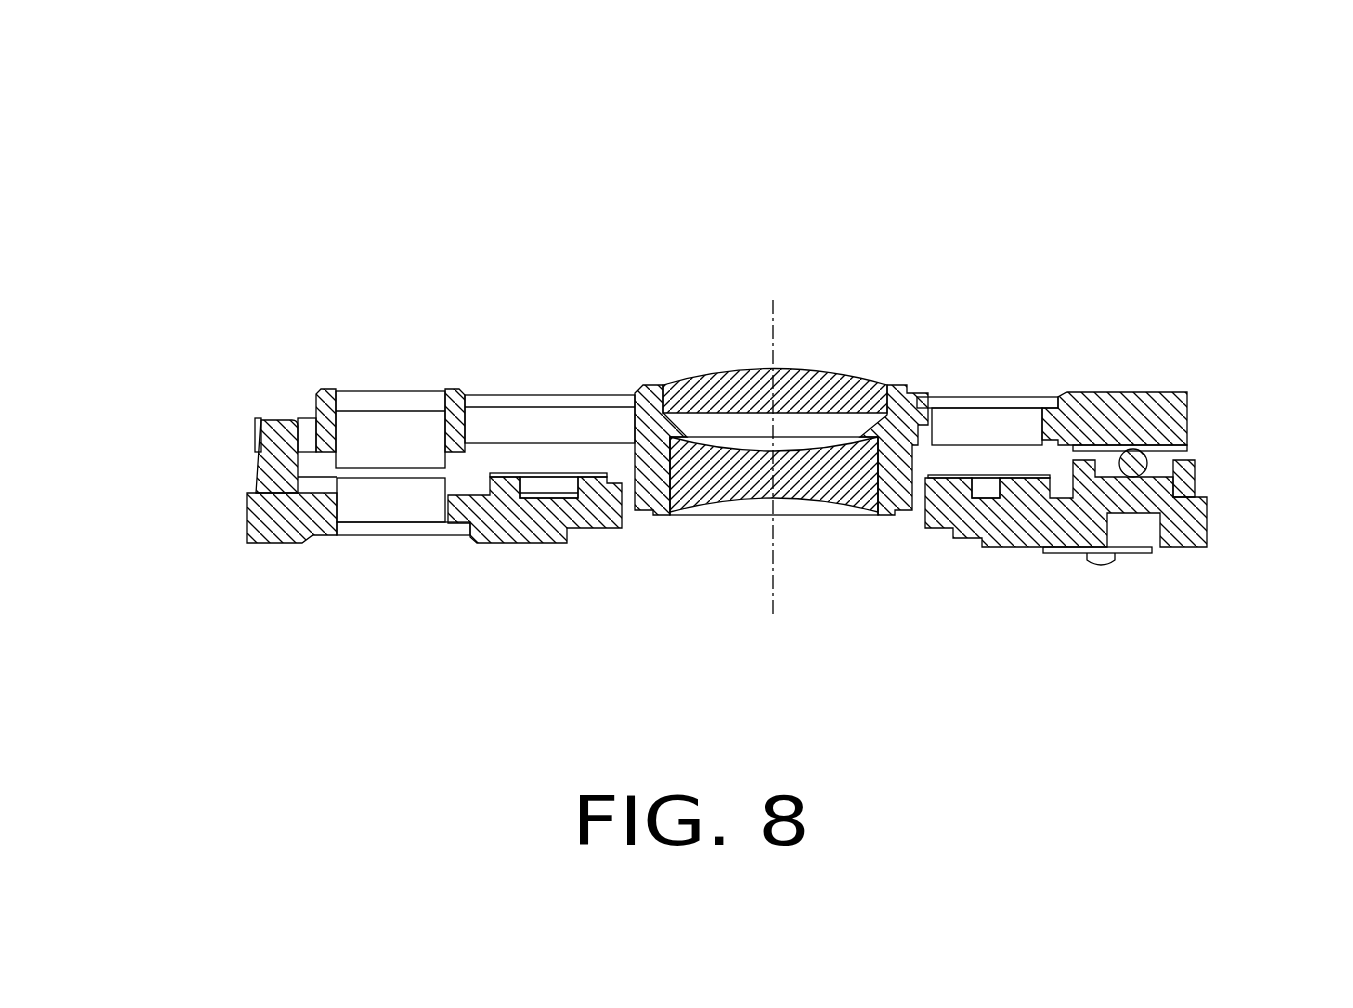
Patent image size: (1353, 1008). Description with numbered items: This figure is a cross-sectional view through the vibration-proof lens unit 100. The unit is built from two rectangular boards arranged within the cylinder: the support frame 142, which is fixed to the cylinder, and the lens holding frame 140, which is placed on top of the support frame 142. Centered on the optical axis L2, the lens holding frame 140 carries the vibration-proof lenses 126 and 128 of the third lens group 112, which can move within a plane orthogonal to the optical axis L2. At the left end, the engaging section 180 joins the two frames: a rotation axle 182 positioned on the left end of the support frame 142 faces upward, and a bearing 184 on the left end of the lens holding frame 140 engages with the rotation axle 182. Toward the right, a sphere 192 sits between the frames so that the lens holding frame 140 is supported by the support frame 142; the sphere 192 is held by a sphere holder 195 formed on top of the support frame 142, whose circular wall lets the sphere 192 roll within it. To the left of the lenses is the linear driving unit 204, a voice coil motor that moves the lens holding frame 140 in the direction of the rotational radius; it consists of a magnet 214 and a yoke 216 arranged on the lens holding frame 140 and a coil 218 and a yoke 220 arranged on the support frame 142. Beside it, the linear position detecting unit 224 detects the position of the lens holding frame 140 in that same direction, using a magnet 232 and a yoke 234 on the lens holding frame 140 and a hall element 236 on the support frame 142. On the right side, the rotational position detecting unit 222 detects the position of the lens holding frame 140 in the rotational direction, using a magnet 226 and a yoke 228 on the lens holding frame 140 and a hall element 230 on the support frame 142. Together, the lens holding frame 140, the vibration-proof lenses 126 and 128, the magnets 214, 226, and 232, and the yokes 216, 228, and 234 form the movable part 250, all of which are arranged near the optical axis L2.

The vibration-proof lens unit 100 is at (228, 114).
The third lens group 112 is at (897, 155).
The vibration-proof lens 126 is at (798, 380).
The vibration-proof lens 128 is at (830, 457).
The lens holding frame 140 is at (1190, 405).
The support frame 142 is at (1207, 525).
The engaging section 180 is at (117, 410).
The rotation axle 182 is at (262, 478).
The bearing 184 is at (257, 432).
The sphere 192 is at (1148, 458).
The sphere holder 195 is at (1197, 485).
The linear driving unit 204 is at (465, 268).
The magnet 214 is at (382, 427).
The yoke 216 is at (395, 397).
The coil 218 is at (402, 493).
The yoke 220 is at (363, 527).
The rotational position detecting unit 222 is at (1150, 269).
The linear position detecting unit 224 is at (683, 269).
The magnet 226 is at (993, 425).
The yoke 228 is at (958, 395).
The hall element 230 is at (993, 485).
The magnet 232 is at (502, 417).
The yoke 234 is at (555, 483).
The hall element 236 is at (557, 472).
The movable part 250 is at (1185, 388).
The optical axis L2 is at (768, 300).